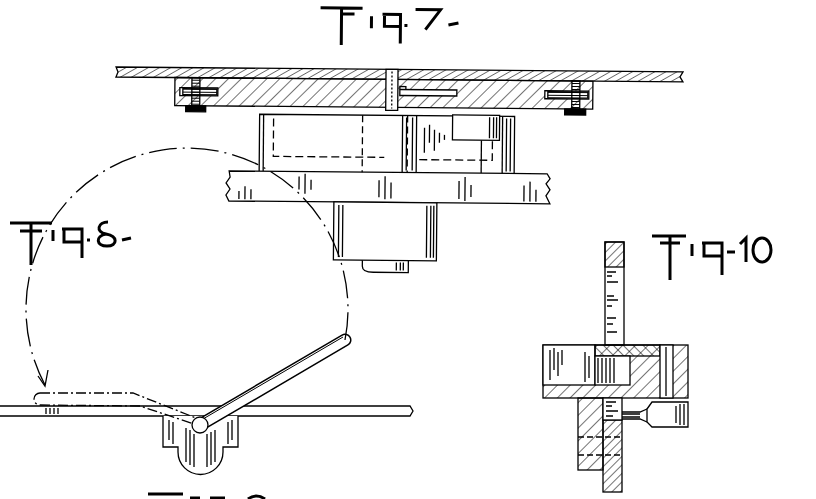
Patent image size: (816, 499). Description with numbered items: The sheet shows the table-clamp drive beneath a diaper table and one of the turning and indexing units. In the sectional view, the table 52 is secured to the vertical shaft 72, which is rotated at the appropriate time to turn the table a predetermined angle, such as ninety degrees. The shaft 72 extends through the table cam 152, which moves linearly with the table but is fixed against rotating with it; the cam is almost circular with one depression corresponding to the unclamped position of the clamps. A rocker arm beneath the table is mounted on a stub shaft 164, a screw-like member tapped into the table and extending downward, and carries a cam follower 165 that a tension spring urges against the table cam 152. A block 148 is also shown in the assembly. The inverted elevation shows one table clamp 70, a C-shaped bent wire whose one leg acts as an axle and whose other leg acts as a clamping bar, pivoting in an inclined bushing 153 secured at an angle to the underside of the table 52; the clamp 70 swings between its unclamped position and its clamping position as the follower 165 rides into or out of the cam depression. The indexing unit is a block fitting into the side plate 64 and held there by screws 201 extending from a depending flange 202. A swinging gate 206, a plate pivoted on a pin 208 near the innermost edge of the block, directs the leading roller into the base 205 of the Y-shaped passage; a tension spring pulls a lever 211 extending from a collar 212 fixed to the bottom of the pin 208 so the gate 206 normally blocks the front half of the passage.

In FIG. 7, the table 52 is at (176, 69).
In FIG. 8, the table 52 is at (355, 406).
In FIG. 7, the support block 148 is at (480, 76).
In FIG. 7, the table cam 152 is at (258, 146).
In FIG. 8, the inclined bushing 153 is at (239, 437).
In FIG. 7, the stub shaft 164 is at (392, 110).
In FIG. 7, the cam follower 165 is at (503, 128).
In FIG. 7, the vertical shaft 72 is at (396, 262).
In FIG. 8, the table clamp 70 is at (112, 360).
In FIG. 10, the side plate 64 is at (605, 250).
In FIG. 10, the screw 201 is at (580, 440).
In FIG. 10, the flange 202 is at (580, 417).
In FIG. 10, the base of the Y-shaped passage 205 is at (545, 363).
In FIG. 10, the swinging gate 206 is at (633, 348).
In FIG. 10, the pin 208 is at (674, 373).
In FIG. 10, the lever 211 is at (637, 421).
In FIG. 10, the collar 212 is at (688, 411).